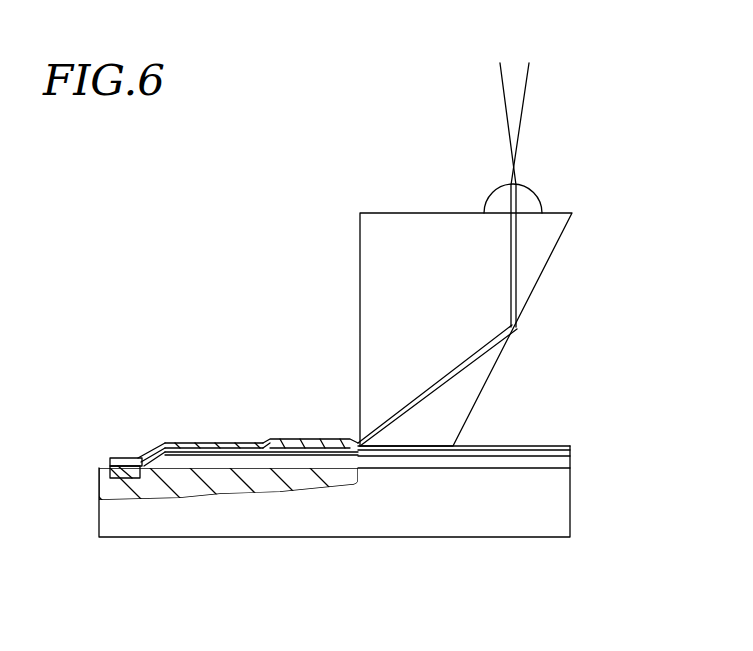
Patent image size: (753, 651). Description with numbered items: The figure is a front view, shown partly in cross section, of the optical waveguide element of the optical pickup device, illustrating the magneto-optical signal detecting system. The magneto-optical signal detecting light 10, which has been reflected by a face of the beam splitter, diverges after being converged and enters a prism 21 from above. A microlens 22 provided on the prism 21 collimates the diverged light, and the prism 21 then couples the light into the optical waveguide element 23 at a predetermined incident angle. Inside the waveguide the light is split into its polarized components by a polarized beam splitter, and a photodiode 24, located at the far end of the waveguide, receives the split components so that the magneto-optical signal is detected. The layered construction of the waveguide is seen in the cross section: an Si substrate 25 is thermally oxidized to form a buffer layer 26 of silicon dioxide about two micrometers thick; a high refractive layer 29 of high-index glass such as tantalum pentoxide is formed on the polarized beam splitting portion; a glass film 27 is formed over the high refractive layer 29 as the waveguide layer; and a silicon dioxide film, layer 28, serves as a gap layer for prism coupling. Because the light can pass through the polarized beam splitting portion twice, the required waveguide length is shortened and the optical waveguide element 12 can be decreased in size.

The magneto-optical signal detecting light 10 is at (527, 100).
The microlens 22 is at (537, 191).
The prism 21 is at (545, 245).
The optical waveguide element 12 is at (557, 395).
The high refractive layer 29 is at (295, 446).
The photodiode 24 is at (104, 468).
The protective layer 28 is at (570, 446).
The glass film 27 is at (570, 452).
The buffer layer 26 is at (570, 462).
The Si substrate 25 is at (564, 507).
The optical waveguide element 23 is at (658, 408).